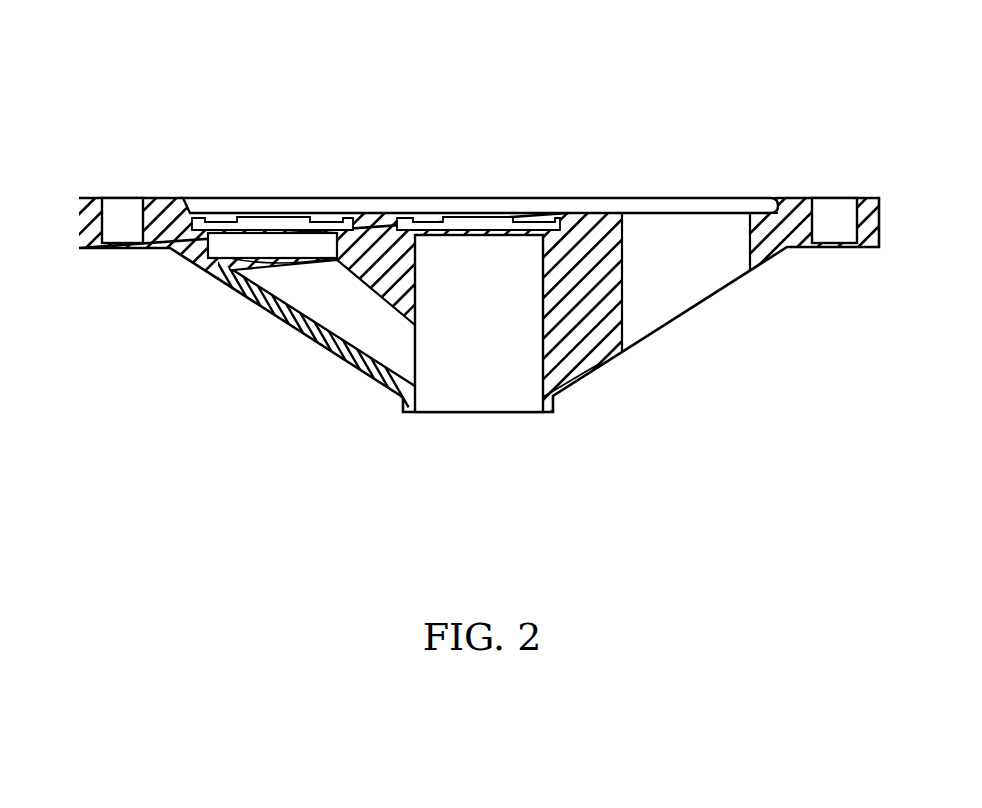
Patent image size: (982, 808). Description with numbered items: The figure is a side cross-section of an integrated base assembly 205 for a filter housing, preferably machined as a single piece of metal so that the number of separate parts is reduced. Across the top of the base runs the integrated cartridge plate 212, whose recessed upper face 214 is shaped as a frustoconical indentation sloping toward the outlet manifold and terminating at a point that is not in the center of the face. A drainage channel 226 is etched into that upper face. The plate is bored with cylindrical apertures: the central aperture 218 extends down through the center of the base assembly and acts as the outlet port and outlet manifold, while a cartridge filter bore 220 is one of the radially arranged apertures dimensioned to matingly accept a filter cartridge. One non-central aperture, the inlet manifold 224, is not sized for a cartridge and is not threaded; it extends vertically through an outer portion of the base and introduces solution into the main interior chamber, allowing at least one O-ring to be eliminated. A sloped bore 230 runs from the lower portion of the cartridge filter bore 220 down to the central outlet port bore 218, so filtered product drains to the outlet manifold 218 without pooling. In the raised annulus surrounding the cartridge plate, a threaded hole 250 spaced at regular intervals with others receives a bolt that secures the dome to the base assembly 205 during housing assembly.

The base assembly 205 is at (102, 78).
The integrated cartridge plate 212 is at (769, 200).
The recessed upper face 214 is at (325, 208).
The central aperture 218 is at (460, 394).
The cartridge filter bore 220 is at (272, 228).
The inlet manifold aperture 224 is at (687, 284).
The drainage channel 226 is at (620, 213).
The sloped bore 230 is at (365, 322).
The threaded hole 250 is at (123, 210).